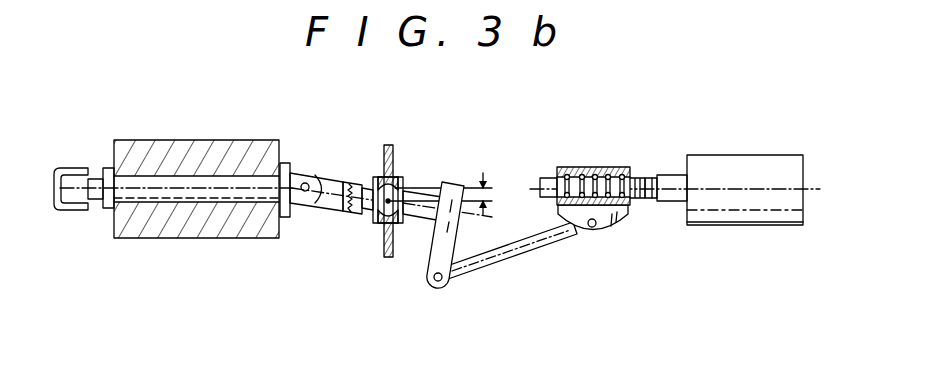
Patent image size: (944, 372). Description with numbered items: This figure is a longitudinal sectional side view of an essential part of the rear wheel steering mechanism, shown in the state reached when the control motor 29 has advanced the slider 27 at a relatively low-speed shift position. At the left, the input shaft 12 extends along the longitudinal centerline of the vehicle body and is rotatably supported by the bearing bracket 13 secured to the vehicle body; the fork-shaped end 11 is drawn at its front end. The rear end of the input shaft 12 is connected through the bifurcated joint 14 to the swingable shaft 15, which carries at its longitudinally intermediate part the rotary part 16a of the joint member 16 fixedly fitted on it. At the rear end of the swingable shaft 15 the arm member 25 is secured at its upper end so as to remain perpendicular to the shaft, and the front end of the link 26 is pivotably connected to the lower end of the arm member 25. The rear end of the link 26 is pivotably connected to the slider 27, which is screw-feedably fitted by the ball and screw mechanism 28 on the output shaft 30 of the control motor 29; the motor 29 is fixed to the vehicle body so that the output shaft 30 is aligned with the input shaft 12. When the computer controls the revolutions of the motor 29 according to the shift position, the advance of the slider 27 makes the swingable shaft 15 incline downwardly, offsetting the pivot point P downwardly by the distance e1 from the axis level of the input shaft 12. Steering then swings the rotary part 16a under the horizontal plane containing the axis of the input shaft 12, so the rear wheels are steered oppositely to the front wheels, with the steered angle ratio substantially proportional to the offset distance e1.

The fork end 11 is at (73, 163).
The input shaft 12 is at (158, 176).
The bearing bracket 13 is at (212, 140).
The bifurcated joint 14 is at (313, 158).
The swingable shaft 15 is at (421, 227).
The joint member 16 is at (394, 149).
The rotary part 16a is at (402, 176).
The pivot point P is at (385, 204).
The offset distance e1 is at (488, 188).
The arm member 25 is at (458, 240).
The link 26 is at (518, 263).
The slider 27 is at (602, 167).
The ball and screw mechanism 28 is at (552, 166).
The control motor 29 is at (720, 155).
The output shaft 30 is at (645, 201).